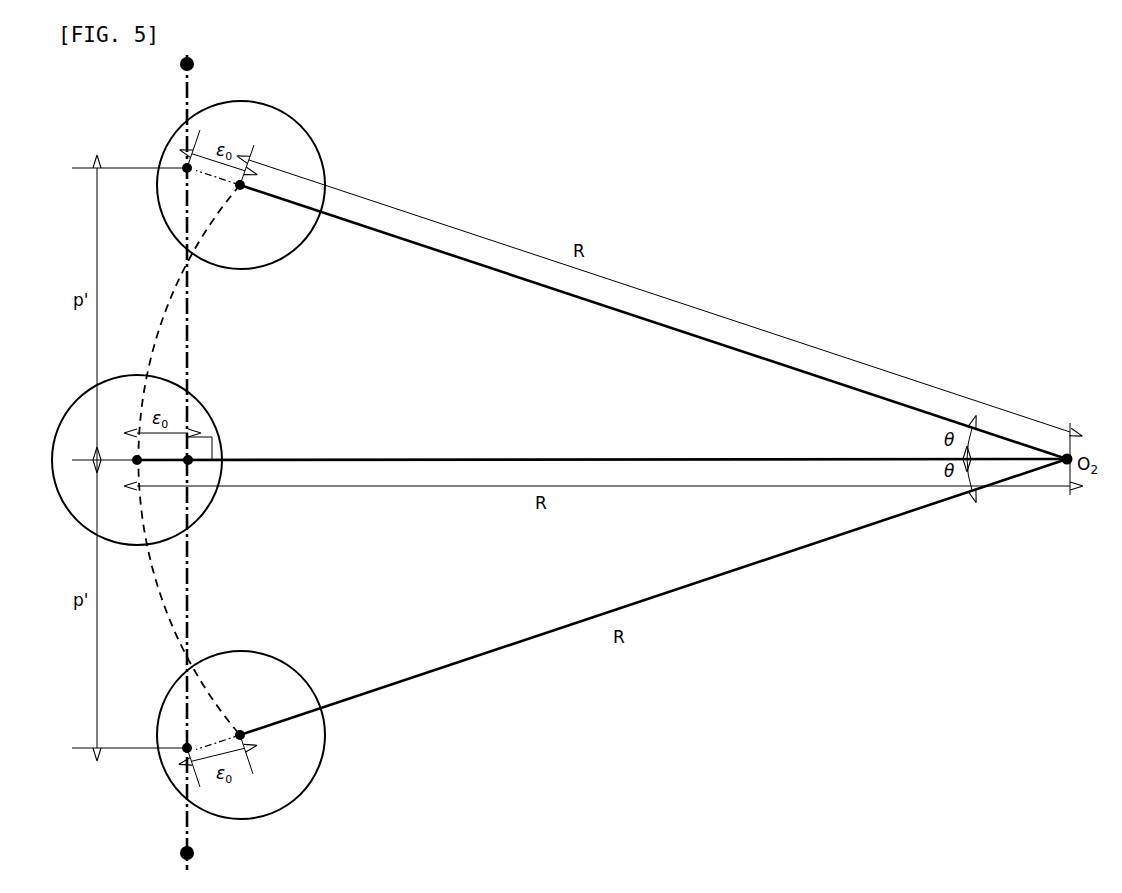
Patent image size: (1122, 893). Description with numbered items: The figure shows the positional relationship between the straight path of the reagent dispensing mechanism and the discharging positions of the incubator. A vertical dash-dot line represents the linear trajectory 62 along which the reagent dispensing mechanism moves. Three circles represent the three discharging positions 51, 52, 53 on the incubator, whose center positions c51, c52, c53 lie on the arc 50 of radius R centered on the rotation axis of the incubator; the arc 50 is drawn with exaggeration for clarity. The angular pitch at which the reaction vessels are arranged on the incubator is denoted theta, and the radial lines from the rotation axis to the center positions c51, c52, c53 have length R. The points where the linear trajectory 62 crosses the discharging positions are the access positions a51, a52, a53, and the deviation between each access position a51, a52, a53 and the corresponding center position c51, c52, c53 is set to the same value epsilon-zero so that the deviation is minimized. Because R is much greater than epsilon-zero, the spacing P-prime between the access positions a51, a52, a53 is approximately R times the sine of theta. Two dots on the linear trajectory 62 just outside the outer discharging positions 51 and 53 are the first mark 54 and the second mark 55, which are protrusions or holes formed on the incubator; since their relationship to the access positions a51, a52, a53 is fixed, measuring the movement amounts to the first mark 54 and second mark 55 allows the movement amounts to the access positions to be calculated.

The arc 50 is at (165, 603).
The discharging position 51 is at (300, 676).
The discharging position 52 is at (212, 418).
The discharging position 53 is at (312, 140).
The first mark 54 is at (196, 852).
The second mark 55 is at (196, 66).
The linear trajectory 62 is at (176, 102).
The access position a51 is at (184, 752).
The access position a52 is at (190, 464).
The access position a53 is at (184, 165).
The center position c51 is at (244, 738).
The center position c52 is at (135, 456).
The center position c53 is at (244, 190).